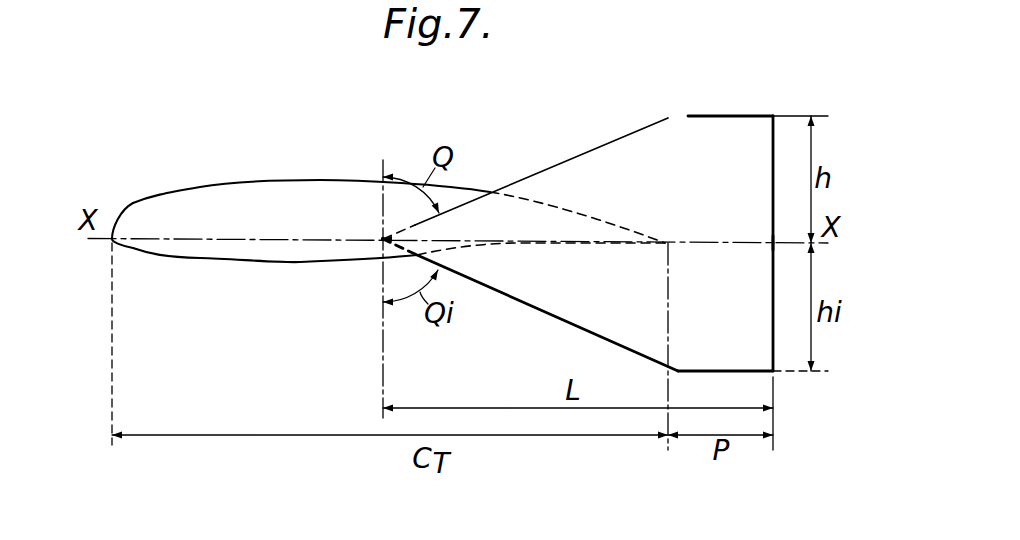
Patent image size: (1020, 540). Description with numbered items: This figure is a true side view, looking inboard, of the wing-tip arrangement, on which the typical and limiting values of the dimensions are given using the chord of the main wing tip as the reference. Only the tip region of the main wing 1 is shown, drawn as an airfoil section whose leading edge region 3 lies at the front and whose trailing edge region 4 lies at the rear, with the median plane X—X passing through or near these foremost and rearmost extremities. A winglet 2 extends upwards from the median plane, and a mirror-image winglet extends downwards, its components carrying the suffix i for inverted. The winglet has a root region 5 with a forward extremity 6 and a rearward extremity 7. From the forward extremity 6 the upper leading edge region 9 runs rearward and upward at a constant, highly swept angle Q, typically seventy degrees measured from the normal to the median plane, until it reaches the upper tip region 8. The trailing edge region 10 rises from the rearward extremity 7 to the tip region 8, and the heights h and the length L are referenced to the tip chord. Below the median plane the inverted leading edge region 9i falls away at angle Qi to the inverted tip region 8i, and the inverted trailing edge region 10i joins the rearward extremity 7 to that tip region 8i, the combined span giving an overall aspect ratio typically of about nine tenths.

The main wing 1 is at (243, 187).
The winglet 2 is at (630, 185).
The leading edge region 3 is at (138, 214).
The trailing edge region 4 is at (637, 227).
The root region 5 is at (496, 232).
The forward extremity 6 is at (383, 239).
The rearward extremity 7 is at (773, 244).
The upper tip region 8 is at (720, 127).
The upper leading edge region 9 is at (582, 154).
The trailing edge region 10 is at (773, 142).
The inverted tip region 8i is at (745, 358).
The inverted leading edge region 9i is at (580, 328).
The inverted trailing edge region 10i is at (773, 283).